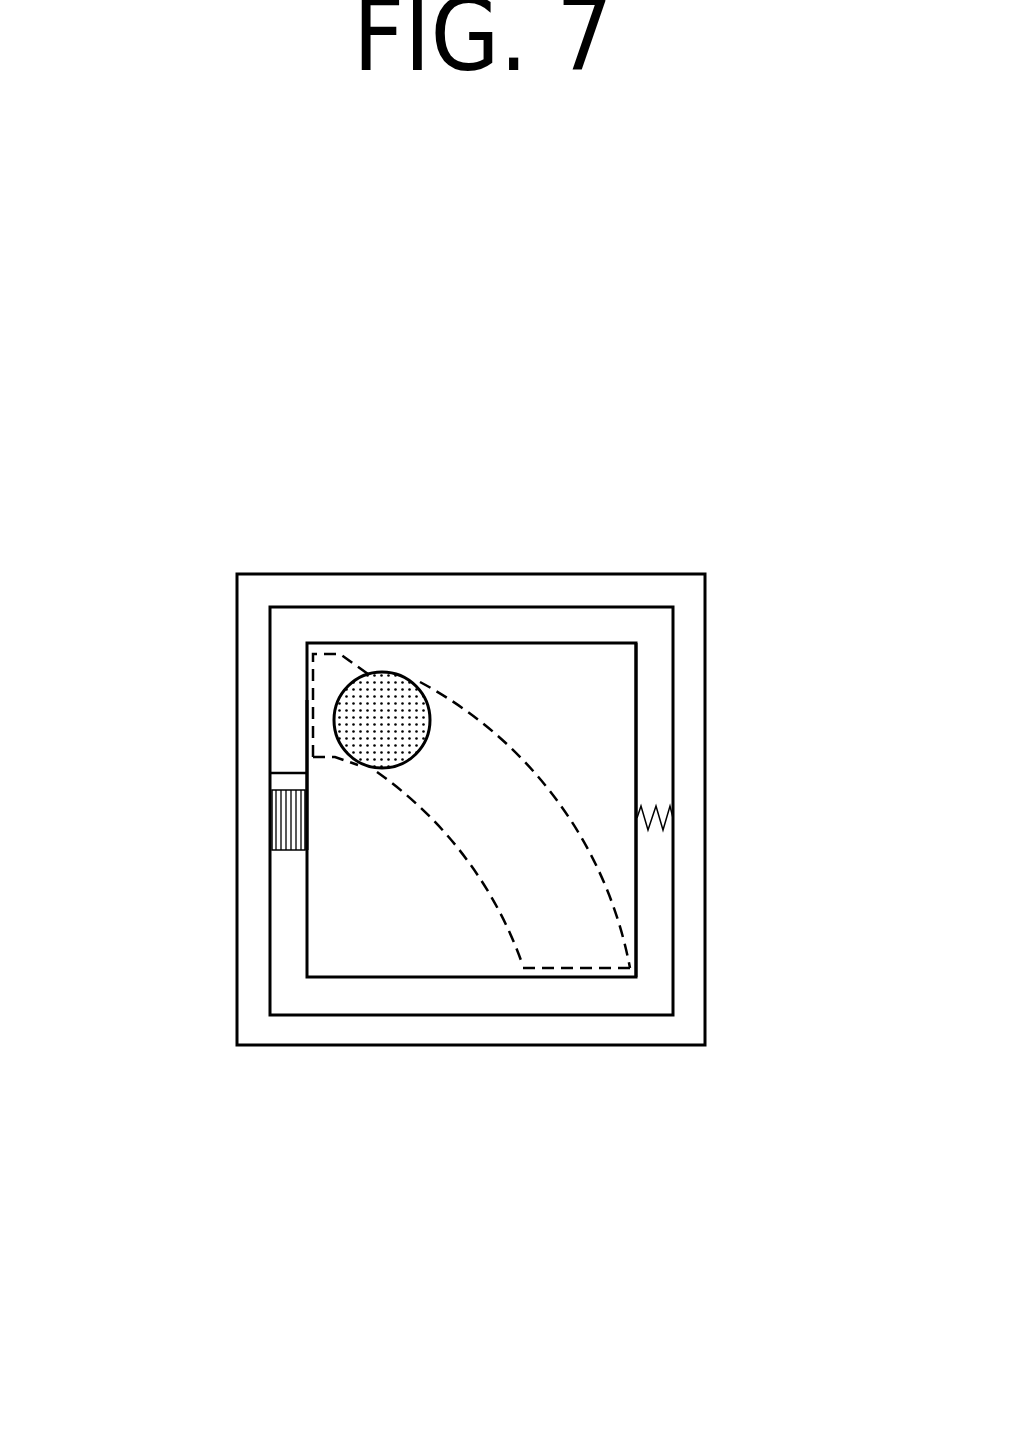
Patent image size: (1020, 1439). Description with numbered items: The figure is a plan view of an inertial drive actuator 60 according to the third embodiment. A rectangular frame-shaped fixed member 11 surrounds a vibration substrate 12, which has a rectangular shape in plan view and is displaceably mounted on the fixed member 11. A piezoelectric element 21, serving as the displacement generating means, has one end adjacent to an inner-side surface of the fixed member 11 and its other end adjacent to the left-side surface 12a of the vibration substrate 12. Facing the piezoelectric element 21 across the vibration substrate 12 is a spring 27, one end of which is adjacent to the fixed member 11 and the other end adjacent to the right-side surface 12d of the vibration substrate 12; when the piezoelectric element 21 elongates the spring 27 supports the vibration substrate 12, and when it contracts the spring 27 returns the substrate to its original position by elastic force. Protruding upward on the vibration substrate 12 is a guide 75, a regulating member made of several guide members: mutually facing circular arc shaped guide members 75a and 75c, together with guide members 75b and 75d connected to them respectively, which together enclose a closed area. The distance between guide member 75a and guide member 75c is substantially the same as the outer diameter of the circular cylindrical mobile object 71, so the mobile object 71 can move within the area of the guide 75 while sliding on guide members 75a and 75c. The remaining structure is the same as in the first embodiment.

The inertial drive actuator 60 is at (507, 1353).
The fixed member 11 is at (692, 648).
The vibration substrate 12 is at (468, 672).
The left-side surface 12a is at (272, 772).
The right-side surface 12d is at (637, 910).
The piezoelectric element 21 is at (287, 823).
The spring 27 is at (667, 810).
The mobile object 71 is at (373, 692).
The guide 75 is at (491, 797).
The guide member 75a is at (412, 841).
The guide member 75b is at (313, 655).
The guide member 75c is at (430, 683).
The guide member 75d is at (598, 860).